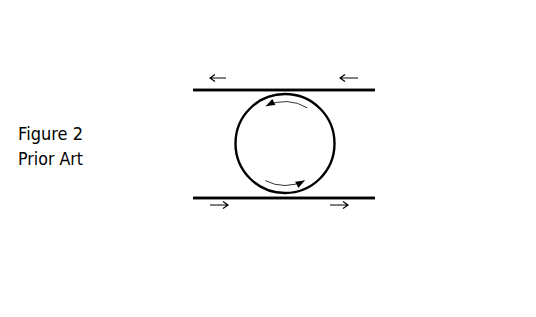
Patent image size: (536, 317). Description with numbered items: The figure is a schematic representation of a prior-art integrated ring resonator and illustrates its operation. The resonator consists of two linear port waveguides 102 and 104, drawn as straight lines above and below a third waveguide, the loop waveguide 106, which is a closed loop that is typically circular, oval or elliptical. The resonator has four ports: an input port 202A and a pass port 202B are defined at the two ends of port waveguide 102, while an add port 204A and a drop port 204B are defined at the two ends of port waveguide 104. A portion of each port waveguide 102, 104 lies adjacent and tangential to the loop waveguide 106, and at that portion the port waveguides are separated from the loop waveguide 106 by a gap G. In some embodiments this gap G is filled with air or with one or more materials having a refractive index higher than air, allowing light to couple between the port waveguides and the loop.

The port waveguide 102 is at (300, 219).
The port waveguide 104 is at (264, 73).
The loop waveguide 106 is at (334, 148).
The input port 202A is at (193, 198).
The pass port 202B is at (375, 198).
The add port 204A is at (375, 90).
The drop port 204B is at (193, 90).
The gap G is at (305, 93).